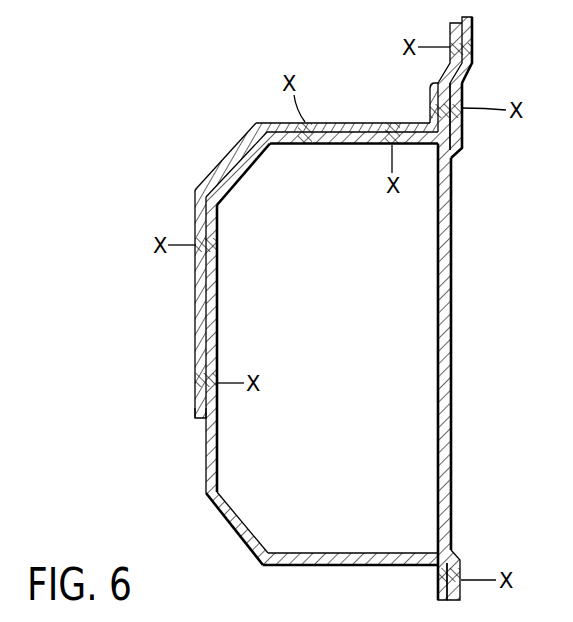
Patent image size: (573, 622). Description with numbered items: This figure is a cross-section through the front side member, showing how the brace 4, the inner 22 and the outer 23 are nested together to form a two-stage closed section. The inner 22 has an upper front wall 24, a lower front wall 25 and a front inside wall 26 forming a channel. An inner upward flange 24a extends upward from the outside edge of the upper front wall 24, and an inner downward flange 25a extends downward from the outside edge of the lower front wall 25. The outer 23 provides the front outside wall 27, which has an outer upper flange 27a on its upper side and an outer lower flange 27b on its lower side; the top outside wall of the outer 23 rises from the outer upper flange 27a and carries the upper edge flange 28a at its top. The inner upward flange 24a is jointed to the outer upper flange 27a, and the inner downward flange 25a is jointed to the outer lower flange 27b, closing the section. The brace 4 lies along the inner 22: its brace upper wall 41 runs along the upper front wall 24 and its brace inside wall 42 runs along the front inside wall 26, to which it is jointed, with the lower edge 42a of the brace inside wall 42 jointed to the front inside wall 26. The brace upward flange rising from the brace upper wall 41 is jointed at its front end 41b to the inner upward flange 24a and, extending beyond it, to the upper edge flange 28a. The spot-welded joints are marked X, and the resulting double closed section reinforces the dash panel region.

The brace 4 is at (283, 231).
The brace upper wall 41 is at (343, 122).
The front end of the brace upward flange 41b is at (432, 86).
The brace inside wall 42 is at (196, 307).
The lower edge of the brace inside wall 42a is at (196, 406).
The inner 22 is at (232, 520).
The outer 23 is at (360, 311).
The upper front wall 24 is at (337, 143).
The inner upward flange 24a is at (463, 90).
The lower front wall 25 is at (343, 553).
The inner downward flange 25a is at (440, 590).
The front inside wall 26 is at (218, 325).
The front outside wall 27 is at (452, 353).
The outer upper flange 27a is at (455, 133).
The outer lower flange 27b is at (460, 555).
The upper edge flange 28a is at (473, 32).